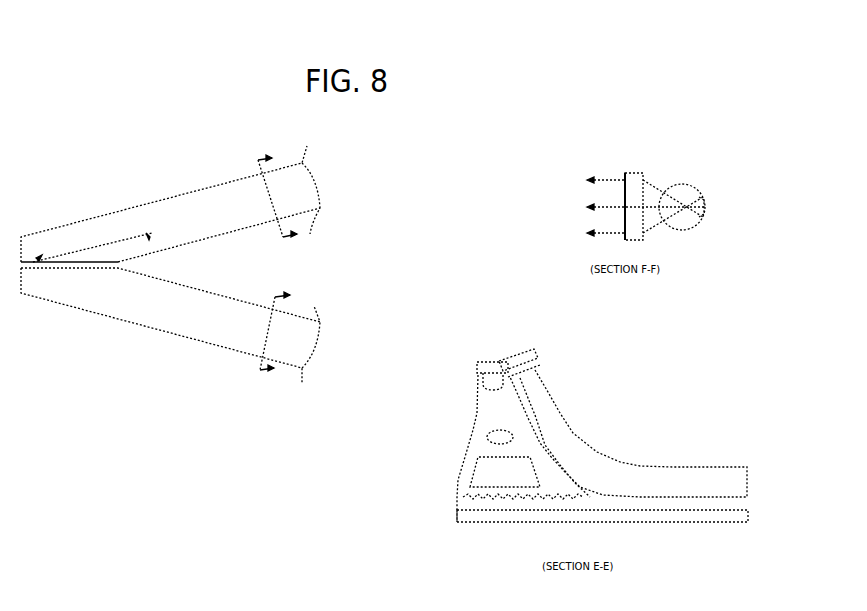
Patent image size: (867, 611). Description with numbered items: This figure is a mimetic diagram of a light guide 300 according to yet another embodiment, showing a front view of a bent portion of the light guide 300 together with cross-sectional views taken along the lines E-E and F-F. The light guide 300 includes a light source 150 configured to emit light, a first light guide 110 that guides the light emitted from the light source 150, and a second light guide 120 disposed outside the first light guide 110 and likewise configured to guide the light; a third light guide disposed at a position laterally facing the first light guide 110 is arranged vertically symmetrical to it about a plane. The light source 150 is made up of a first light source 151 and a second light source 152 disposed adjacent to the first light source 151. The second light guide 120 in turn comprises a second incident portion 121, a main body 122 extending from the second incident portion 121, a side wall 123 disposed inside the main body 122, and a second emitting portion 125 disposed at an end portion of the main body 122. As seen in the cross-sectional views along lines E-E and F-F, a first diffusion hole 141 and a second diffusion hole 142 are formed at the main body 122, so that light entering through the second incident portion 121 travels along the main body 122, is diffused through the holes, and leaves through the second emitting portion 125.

The light guide 300 is at (170, 262).
The first light guide 110 is at (678, 185).
The second light guide 120 is at (357, 360).
The second incident portion 121 is at (477, 382).
The main body 122 is at (472, 457).
The side wall 123 is at (515, 408).
The second emitting portion 125 is at (462, 503).
The first diffusion hole 141 is at (486, 438).
The second diffusion hole 142 is at (460, 476).
The light source 150 is at (534, 296).
The first light source 151 is at (527, 348).
The second light source 152 is at (492, 361).